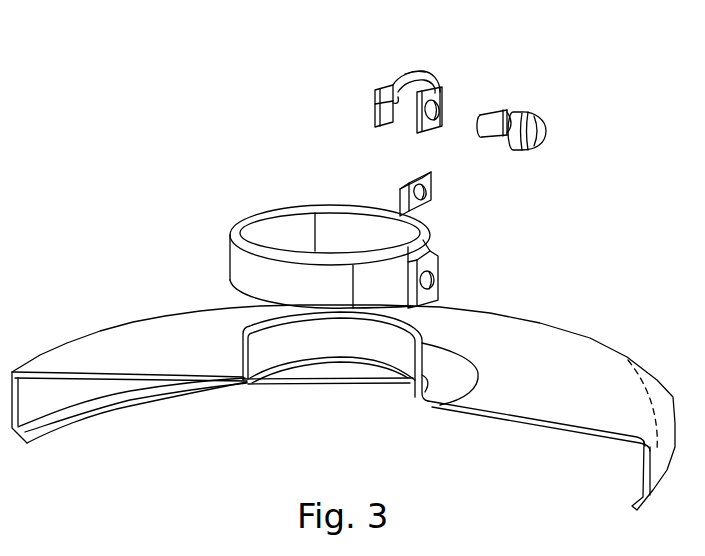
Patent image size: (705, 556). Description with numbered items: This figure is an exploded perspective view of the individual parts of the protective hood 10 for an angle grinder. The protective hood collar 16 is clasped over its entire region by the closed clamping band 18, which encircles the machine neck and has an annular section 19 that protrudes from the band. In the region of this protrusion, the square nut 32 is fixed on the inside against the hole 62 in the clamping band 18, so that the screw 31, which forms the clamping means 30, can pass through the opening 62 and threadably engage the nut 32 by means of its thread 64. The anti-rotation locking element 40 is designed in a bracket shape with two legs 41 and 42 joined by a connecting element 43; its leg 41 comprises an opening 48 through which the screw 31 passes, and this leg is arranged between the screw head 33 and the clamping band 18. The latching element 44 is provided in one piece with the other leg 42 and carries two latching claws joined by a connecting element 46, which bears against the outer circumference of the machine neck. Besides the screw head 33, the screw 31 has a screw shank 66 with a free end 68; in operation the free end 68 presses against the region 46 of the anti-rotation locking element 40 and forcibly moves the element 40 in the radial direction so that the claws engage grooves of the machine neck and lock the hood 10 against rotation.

The protective hood 10 is at (140, 312).
The protective hood collar 16 is at (257, 346).
The clamping band 18 is at (242, 268).
The annular section 19 is at (433, 242).
The opening 62 is at (437, 283).
The nut 32 is at (405, 174).
The anti-rotation locking element 40 is at (435, 80).
The leg 41 is at (443, 93).
The leg 42 is at (388, 87).
The connecting element 43 is at (418, 72).
The latching element 44 is at (382, 98).
The connecting element 46 is at (383, 117).
The opening 48 is at (442, 122).
The clamping means 30 is at (520, 152).
The screw 31 is at (519, 117).
The screw head 33 is at (538, 132).
The thread 64 is at (503, 138).
The screw shank 66 is at (492, 122).
The free end 68 is at (480, 117).